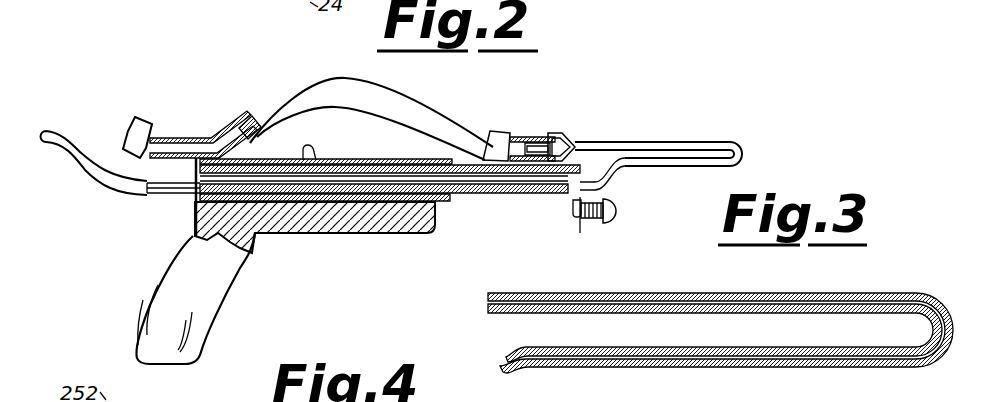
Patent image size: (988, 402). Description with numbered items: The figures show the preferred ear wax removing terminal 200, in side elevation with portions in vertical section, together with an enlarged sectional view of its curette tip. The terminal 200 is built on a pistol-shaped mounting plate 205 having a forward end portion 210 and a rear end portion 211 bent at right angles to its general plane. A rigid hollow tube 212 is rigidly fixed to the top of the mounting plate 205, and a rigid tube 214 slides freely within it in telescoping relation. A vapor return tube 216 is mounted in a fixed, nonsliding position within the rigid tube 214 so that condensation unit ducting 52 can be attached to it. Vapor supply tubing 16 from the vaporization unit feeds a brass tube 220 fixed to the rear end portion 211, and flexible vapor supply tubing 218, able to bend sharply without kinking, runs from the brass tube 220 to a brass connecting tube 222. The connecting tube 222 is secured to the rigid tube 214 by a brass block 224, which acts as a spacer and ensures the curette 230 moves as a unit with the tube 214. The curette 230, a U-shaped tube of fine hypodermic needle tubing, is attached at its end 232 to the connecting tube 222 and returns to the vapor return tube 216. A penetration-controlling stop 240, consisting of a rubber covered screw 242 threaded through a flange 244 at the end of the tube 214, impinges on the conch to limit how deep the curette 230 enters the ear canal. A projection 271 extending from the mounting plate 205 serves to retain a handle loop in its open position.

In FIG. 2, the vapor supply tubing 16 is at (127, 132).
In FIG. 2, the condensation unit ducting 52 is at (68, 153).
In FIG. 2, the ear wax removing terminal 200 is at (372, 262).
In FIG. 2, the mounting plate 205 is at (238, 287).
In FIG. 2, the forward end portion 210 is at (412, 236).
In FIG. 2, the rear end portion 211 is at (137, 333).
In FIG. 2, the rigid hollow tube 212 is at (380, 158).
In FIG. 2, the rigid tube 214 is at (490, 130).
In FIG. 2, the vapor return tube 216 is at (623, 186).
In FIG. 2, the vapor supply tubing 218 is at (420, 108).
In FIG. 2, the brass tube 220 is at (192, 140).
In FIG. 2, the brass connecting tube 222 is at (533, 136).
In FIG. 2, the brass block 224 is at (524, 181).
In FIG. 2, the curette 230 is at (686, 143).
In FIG. 3, the curette 230 is at (865, 293).
In FIG. 2, the end 232 is at (560, 131).
In FIG. 2, the penetration-controlling stop 240 is at (593, 242).
In FIG. 2, the rubber covered screw 242 is at (595, 236).
In FIG. 2, the flange 244 is at (575, 210).
In FIG. 2, the projection 271 is at (300, 150).